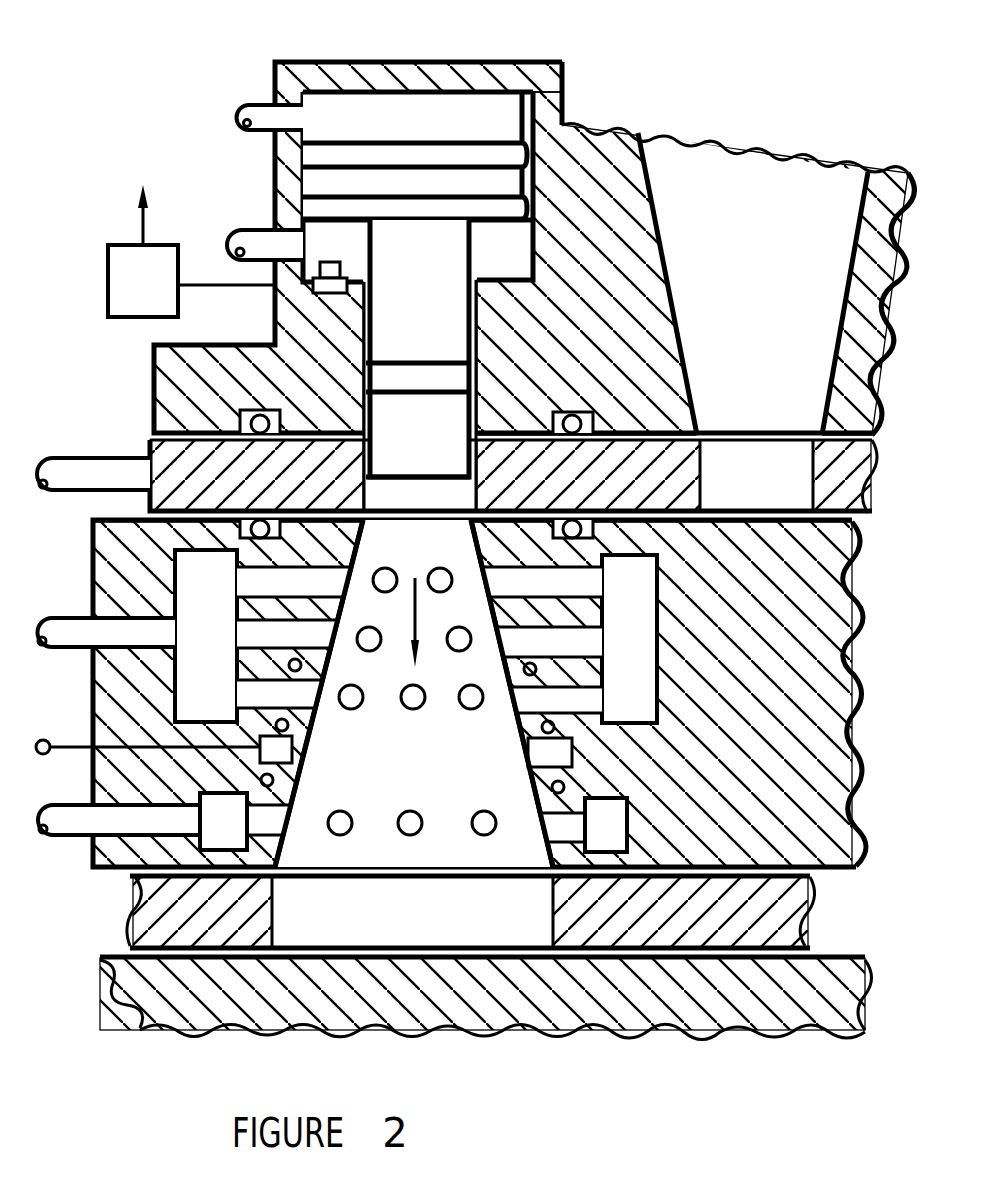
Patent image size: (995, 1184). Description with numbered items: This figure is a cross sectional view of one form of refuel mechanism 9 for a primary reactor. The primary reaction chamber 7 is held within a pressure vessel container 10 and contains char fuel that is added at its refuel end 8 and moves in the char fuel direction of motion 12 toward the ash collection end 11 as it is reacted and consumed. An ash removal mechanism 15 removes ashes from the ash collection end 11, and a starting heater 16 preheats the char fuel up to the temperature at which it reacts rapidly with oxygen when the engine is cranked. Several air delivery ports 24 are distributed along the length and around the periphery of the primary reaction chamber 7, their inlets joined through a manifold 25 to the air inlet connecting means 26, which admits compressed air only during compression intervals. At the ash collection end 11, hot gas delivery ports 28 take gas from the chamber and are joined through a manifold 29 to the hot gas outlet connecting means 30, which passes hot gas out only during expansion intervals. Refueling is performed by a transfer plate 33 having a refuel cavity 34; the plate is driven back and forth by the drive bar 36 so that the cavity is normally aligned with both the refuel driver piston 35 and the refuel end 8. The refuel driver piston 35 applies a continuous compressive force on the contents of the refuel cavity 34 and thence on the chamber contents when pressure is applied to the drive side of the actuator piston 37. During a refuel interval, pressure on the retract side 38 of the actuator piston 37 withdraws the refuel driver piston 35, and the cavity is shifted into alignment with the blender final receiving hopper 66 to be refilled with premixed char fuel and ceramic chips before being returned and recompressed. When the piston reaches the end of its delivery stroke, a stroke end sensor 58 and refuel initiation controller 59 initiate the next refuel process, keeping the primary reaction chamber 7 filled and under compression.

The primary reaction chamber 7 is at (368, 757).
The refuel end 8 is at (398, 550).
The refuel mechanism 9 is at (190, 385).
The pressure vessel container 10 is at (120, 545).
The ash collection end 11 is at (445, 847).
The char fuel direction of motion 12 is at (418, 618).
The ash removal mechanism 15 is at (182, 913).
The starting heater 16 is at (277, 723).
The air delivery ports 24 is at (363, 711).
The manifold 25 is at (205, 590).
The air inlet connecting means 26 is at (70, 630).
The hot gas delivery ports 28 is at (407, 830).
The manifold 29 is at (220, 827).
The hot gas outlet connecting means 30 is at (73, 820).
The transfer plate 33 is at (823, 490).
The refuel cavity 34 is at (440, 492).
The refuel driver piston 35 is at (435, 273).
The drive bar 36 is at (448, 110).
The actuator piston 37 is at (472, 188).
The retract side 38 is at (338, 237).
The stroke end sensor 58 is at (333, 285).
The refuel initiation controller 59 is at (137, 282).
The blender final receiving hopper 66 is at (712, 200).